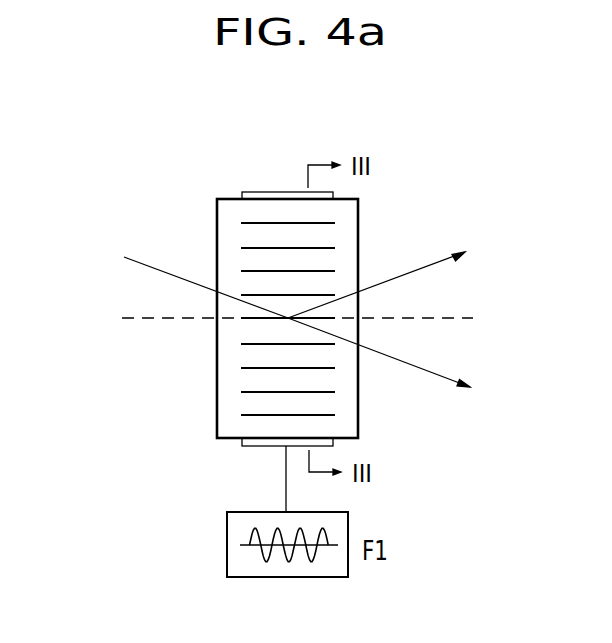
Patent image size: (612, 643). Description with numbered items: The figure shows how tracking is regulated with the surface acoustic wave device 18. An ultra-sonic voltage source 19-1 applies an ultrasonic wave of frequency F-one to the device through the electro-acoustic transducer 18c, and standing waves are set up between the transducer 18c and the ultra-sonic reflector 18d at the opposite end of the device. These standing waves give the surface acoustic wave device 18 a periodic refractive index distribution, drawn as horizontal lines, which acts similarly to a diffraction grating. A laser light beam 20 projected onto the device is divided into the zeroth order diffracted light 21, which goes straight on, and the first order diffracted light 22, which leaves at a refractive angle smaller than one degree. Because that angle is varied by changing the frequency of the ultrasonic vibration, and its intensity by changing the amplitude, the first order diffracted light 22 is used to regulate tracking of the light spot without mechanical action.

The surface acoustic wave device 18 is at (214, 227).
The ultra-sonic reflector 18d is at (268, 191).
The electro-acoustic transducer 18c is at (254, 448).
The laser light beam 20 is at (155, 267).
The 1st order diffracted light 22 is at (418, 268).
The 0-th order diffracted light 21 is at (413, 366).
The ultra-sonic voltage source 19-1 is at (227, 553).